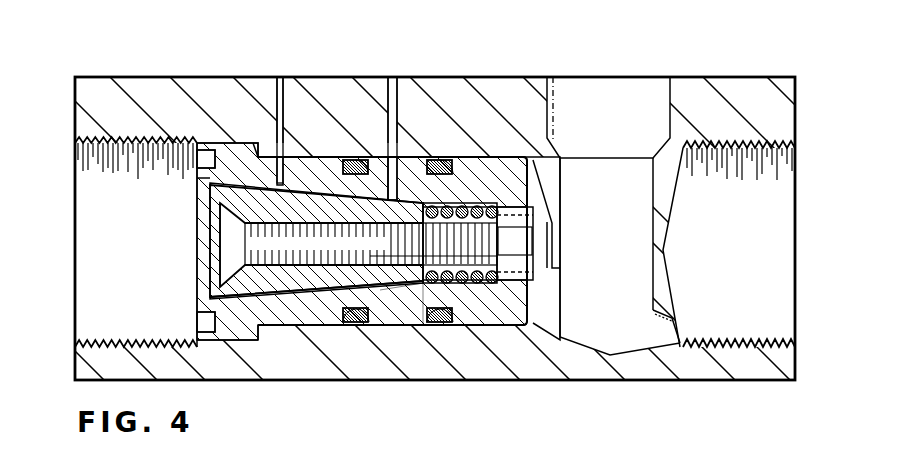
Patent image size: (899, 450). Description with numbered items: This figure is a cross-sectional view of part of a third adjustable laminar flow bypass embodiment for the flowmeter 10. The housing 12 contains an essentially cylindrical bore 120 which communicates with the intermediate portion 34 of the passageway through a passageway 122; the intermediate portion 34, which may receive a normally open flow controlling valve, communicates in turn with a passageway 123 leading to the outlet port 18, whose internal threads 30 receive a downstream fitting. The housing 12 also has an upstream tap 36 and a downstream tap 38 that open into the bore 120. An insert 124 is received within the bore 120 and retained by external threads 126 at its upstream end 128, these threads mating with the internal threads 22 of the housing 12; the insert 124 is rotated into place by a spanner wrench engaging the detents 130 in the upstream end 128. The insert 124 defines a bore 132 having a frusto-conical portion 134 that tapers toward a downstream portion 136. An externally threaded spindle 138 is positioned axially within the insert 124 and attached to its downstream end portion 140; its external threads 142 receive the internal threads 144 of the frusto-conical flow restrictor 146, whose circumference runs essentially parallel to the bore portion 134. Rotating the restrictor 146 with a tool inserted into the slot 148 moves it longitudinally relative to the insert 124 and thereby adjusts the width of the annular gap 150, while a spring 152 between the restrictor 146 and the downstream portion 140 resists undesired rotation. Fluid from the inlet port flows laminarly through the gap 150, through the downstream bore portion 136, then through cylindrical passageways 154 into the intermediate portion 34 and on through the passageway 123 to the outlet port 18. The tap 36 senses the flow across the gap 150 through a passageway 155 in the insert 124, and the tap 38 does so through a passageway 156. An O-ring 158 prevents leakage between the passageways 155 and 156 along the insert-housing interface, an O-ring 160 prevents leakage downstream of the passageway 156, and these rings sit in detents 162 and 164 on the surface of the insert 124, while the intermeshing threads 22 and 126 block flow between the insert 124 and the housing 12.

The flowmeter 10 is at (76, 216).
The housing 12 is at (655, 363).
The outlet port 18 is at (801, 143).
The internal threads 22 is at (95, 336).
The internal threads 30 is at (735, 345).
The intermediate portion 34 is at (620, 256).
The upstream tap 36 is at (278, 88).
The downstream tap 38 is at (390, 88).
The cylindrical bore 120 is at (490, 205).
The passageway 122 is at (553, 253).
The passageway 123 is at (670, 332).
The insert 124 is at (328, 325).
The external threads 126 is at (250, 333).
The upstream end 128 is at (262, 330).
The detents 130 is at (200, 160).
The bore 132 is at (430, 325).
The frusto-conical portion 134 is at (203, 178).
The downstream portion 136 is at (500, 328).
The spindle 138 is at (420, 292).
The downstream end portion 140 is at (530, 258).
The external threads 142 is at (340, 235).
The internal threads 144 is at (292, 328).
The flow restrictor 146 is at (240, 275).
The slot 148 is at (215, 240).
The annular gap 150 is at (440, 172).
The spring 152 is at (465, 208).
The cylindrical passageways 154 is at (533, 205).
The passageway 155 is at (258, 152).
The passageway 156 is at (400, 175).
The O-ring 158 is at (352, 165).
The O-ring 160 is at (455, 200).
The detent 162 is at (355, 322).
The detent 164 is at (457, 325).